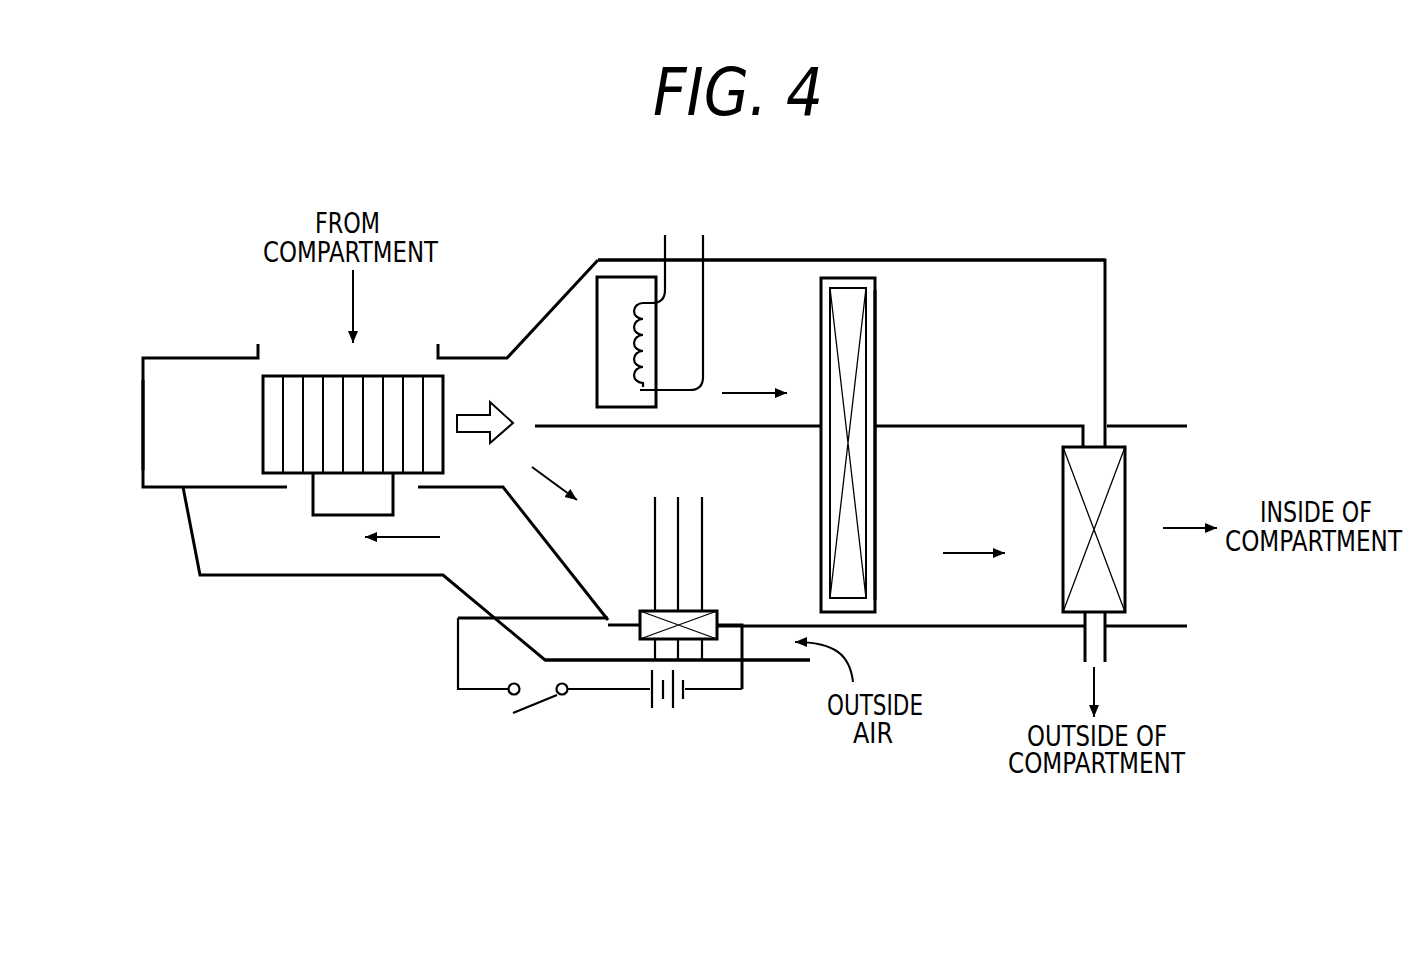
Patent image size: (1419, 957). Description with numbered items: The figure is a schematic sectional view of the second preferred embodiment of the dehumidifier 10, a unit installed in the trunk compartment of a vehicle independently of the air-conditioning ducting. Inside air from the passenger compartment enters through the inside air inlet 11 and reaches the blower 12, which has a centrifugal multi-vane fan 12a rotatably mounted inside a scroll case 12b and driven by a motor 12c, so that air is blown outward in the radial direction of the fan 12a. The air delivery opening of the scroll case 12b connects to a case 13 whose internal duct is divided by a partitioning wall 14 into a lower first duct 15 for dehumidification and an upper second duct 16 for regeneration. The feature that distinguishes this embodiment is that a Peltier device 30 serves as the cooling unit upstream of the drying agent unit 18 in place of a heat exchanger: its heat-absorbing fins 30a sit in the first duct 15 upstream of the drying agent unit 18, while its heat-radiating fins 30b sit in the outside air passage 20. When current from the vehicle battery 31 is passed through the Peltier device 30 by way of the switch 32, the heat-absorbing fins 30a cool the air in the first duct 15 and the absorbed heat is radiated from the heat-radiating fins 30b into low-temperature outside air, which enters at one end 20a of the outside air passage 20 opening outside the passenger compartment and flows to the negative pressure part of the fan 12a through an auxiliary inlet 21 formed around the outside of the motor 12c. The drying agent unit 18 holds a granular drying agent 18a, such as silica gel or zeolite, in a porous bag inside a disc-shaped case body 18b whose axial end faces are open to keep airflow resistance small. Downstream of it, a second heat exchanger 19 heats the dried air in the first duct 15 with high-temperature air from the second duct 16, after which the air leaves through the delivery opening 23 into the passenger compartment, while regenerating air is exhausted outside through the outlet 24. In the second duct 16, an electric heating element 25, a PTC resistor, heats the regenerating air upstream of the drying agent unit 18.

The dehumidifier 10 is at (1072, 252).
The inside air inlet 11 is at (300, 355).
The blower 12 is at (237, 417).
The centrifugal multi-vane fan 12a is at (385, 393).
The scroll case 12b is at (142, 447).
The motor 12c is at (343, 507).
The case 13 is at (763, 260).
The partitioning wall 14 is at (1012, 427).
The first duct for dehumidification 15 is at (890, 588).
The second duct for regeneration 16 is at (978, 297).
The drying agent unit 18 is at (880, 508).
The granular drying agent 18a is at (847, 303).
The case body 18b is at (877, 323).
The second heat exchanger 19 is at (1115, 557).
The outside air passage 20 is at (507, 580).
The one end of outside air passage 20a is at (777, 652).
The auxiliary inlet 21 is at (300, 490).
The delivery opening 23 is at (1165, 472).
The outlet 24 is at (1087, 652).
The electric heating element 25 is at (597, 327).
The Peltier device 30 is at (722, 610).
The heat-absorbing fins 30a is at (650, 545).
The heat-radiating fins 30b is at (650, 657).
The vehicle battery 31 is at (663, 707).
The switch 32 is at (535, 710).